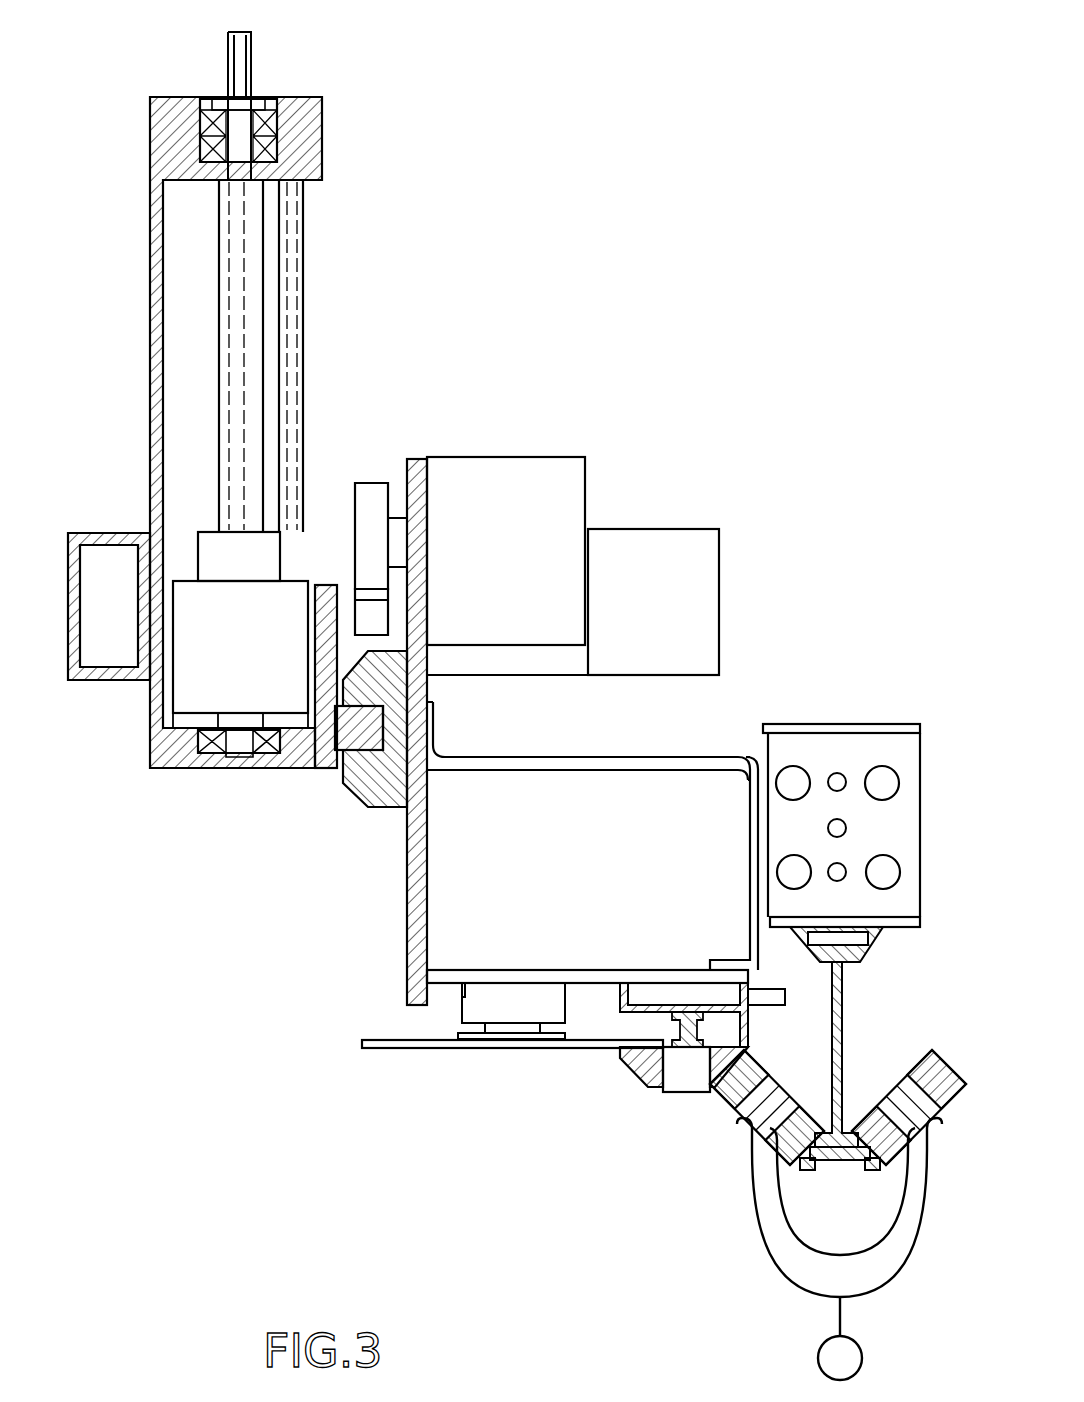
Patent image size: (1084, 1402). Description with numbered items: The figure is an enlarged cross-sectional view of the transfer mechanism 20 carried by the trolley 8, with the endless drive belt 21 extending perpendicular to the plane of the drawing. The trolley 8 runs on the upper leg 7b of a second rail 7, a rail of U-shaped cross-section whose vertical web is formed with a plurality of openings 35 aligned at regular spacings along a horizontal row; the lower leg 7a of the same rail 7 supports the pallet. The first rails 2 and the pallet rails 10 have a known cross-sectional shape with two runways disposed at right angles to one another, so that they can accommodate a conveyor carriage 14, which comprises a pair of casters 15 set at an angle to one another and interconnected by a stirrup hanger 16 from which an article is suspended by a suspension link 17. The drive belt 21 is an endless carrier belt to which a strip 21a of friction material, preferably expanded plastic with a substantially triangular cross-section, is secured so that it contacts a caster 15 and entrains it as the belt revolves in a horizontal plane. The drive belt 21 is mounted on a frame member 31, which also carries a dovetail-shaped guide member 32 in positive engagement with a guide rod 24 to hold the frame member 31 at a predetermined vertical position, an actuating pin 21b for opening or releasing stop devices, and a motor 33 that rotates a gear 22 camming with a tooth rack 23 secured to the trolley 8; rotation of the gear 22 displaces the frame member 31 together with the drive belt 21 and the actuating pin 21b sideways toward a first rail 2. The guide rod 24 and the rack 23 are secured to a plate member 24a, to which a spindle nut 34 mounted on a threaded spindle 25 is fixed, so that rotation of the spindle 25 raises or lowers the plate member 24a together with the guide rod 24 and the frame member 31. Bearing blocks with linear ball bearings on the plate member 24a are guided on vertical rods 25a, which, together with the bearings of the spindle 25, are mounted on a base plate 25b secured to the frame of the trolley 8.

The first rails 2 is at (871, 1054).
The second rails 7 is at (802, 818).
The lower leg 7a is at (790, 722).
The upper leg 7b is at (905, 930).
The trolley 8 is at (110, 535).
The pallet rails 10 is at (843, 1047).
The conveyor carriage 14 is at (784, 1171).
The casters 15 is at (775, 1105).
The stirrup hanger 16 is at (780, 1233).
The suspension link 17 is at (838, 1360).
The transfer mechanism 20 is at (552, 597).
The drive belt 21 is at (605, 1062).
The strip of friction material 21a is at (640, 1080).
The actuating pin 21b is at (743, 957).
The gear 22 is at (373, 507).
The tooth rack 23 is at (370, 620).
The guide rod 24 is at (390, 783).
The plate member 24a is at (325, 770).
The threaded spindle 25 is at (237, 248).
The vertical rods 25a is at (298, 267).
The base plate 25b is at (158, 337).
The frame member 31 is at (415, 905).
The guide member 32 is at (388, 800).
The motor 33 is at (518, 490).
The spindle nut 34 is at (242, 658).
The openings 35 is at (882, 867).